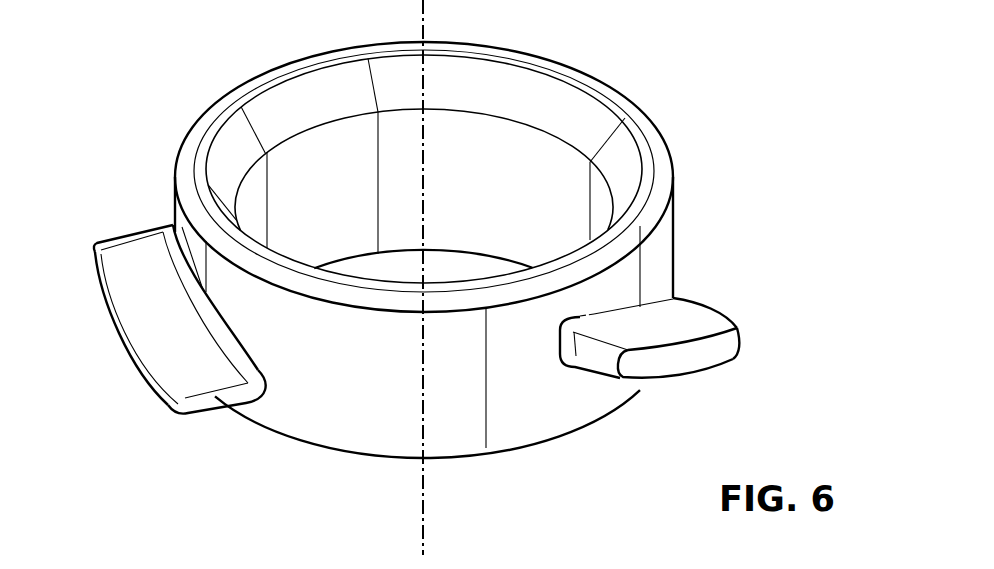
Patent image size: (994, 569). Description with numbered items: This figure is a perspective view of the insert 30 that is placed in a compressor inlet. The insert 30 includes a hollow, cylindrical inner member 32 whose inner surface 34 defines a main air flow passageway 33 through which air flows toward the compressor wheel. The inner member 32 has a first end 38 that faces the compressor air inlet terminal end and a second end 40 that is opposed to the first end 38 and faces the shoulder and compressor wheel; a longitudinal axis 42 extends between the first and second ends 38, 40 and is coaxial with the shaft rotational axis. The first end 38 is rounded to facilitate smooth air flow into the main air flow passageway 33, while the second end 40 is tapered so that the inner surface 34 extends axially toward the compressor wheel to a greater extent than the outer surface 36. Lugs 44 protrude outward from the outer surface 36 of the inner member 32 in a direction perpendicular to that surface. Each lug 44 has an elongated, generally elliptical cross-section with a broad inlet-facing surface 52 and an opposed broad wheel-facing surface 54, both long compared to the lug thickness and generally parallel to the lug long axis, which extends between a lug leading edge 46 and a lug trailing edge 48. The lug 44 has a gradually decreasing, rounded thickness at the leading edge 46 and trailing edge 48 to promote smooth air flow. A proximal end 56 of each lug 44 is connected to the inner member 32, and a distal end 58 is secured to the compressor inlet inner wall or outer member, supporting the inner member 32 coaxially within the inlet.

The insert 30 is at (381, 381).
The inner member 32 is at (663, 260).
The main air flow passageway 33 is at (318, 144).
The inner surface 34 is at (542, 150).
The outer surface 36 is at (332, 430).
The first end 38 is at (632, 122).
The second end 40 is at (456, 458).
The longitudinal axis 42 is at (425, 80).
The lug 44 is at (707, 366).
The lug leading edge 46 is at (608, 368).
The lug trailing edge 48 is at (740, 345).
The inlet-facing surface 52 is at (710, 320).
The wheel-facing surface 54 is at (667, 388).
The proximal end 56 is at (230, 350).
The distal end 58 is at (135, 353).